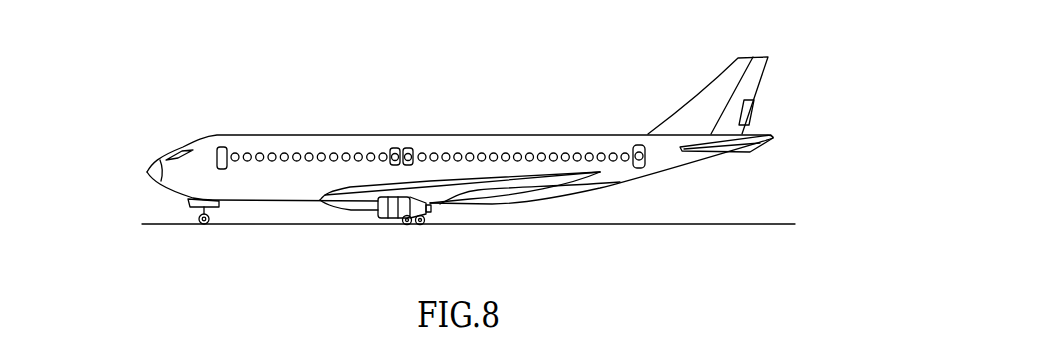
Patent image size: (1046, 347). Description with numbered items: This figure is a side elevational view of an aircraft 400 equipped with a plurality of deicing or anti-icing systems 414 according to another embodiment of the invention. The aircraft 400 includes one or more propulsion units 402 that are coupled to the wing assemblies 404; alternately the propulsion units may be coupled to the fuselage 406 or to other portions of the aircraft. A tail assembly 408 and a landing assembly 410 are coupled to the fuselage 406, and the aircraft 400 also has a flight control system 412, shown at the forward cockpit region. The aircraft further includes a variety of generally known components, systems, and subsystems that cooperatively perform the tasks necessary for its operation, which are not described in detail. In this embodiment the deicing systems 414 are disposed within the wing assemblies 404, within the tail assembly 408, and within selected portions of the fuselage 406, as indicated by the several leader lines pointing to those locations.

The aircraft 400 is at (595, 56).
The propulsion unit 402 is at (377, 218).
The wing assembly 404 is at (473, 187).
The fuselage 406 is at (438, 135).
The tail assembly 408 is at (784, 111).
The landing assembly 410 is at (204, 225).
The flight control system 412 is at (165, 160).
The deicing system 414 is at (145, 173).